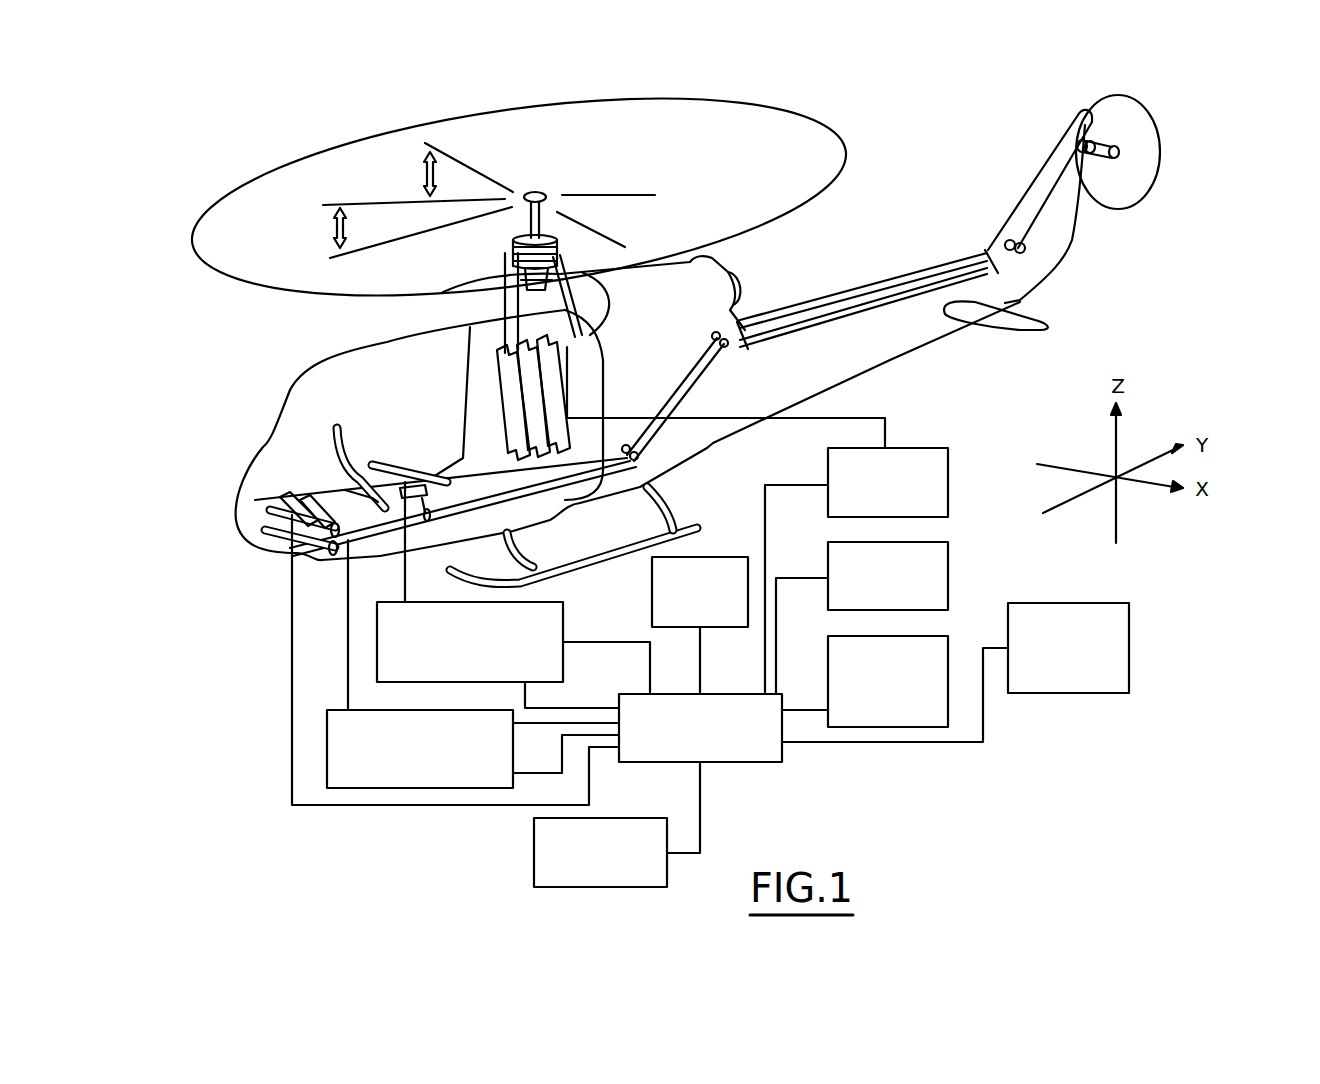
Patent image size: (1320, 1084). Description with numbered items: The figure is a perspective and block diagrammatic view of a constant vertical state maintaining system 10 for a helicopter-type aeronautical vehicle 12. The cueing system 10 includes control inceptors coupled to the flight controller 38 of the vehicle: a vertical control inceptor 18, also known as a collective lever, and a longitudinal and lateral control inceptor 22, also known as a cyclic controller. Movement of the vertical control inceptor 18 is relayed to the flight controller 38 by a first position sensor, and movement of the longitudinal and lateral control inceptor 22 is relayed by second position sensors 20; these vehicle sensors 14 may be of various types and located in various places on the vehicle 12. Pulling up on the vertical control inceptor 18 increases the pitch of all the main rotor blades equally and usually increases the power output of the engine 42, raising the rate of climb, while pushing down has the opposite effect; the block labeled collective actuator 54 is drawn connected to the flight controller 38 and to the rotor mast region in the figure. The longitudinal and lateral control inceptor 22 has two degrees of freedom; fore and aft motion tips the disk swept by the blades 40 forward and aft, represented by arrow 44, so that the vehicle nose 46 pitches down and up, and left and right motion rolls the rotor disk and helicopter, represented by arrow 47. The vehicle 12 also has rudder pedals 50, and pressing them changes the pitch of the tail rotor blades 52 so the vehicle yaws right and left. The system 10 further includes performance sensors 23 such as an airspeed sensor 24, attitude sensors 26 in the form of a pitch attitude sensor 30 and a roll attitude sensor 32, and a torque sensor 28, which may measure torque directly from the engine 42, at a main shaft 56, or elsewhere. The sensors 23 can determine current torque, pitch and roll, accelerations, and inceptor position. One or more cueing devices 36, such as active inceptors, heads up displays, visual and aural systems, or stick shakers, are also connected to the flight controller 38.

The constant vertical state maintaining system 10 is at (932, 393).
The helicopter-type aeronautical vehicle 12 is at (867, 283).
The vehicle sensors 14 is at (357, 710).
The vertical control inceptor 18 is at (387, 455).
The second position sensors 20 is at (327, 750).
The longitudinal and lateral control inceptor 22 is at (345, 437).
The performance sensors 23 is at (723, 557).
The airspeed sensor 24 is at (948, 555).
The attitude sensors 26 is at (996, 628).
The torque sensor 28 is at (682, 628).
The pitch attitude sensor 30 is at (930, 636).
The roll attitude sensor 32 is at (1093, 603).
The cueing devices 36 is at (588, 888).
The flight controller 38 is at (737, 765).
The main rotor blades 40 is at (845, 143).
The engine 42 is at (730, 310).
The arrow 44 is at (330, 232).
The vehicle nose 46 is at (243, 479).
The arrow 47 is at (421, 176).
The rudder pedals 50 is at (310, 500).
The tail rotor blades 52 is at (1158, 162).
The collective actuator 54 is at (932, 448).
The main shaft 56 is at (527, 222).